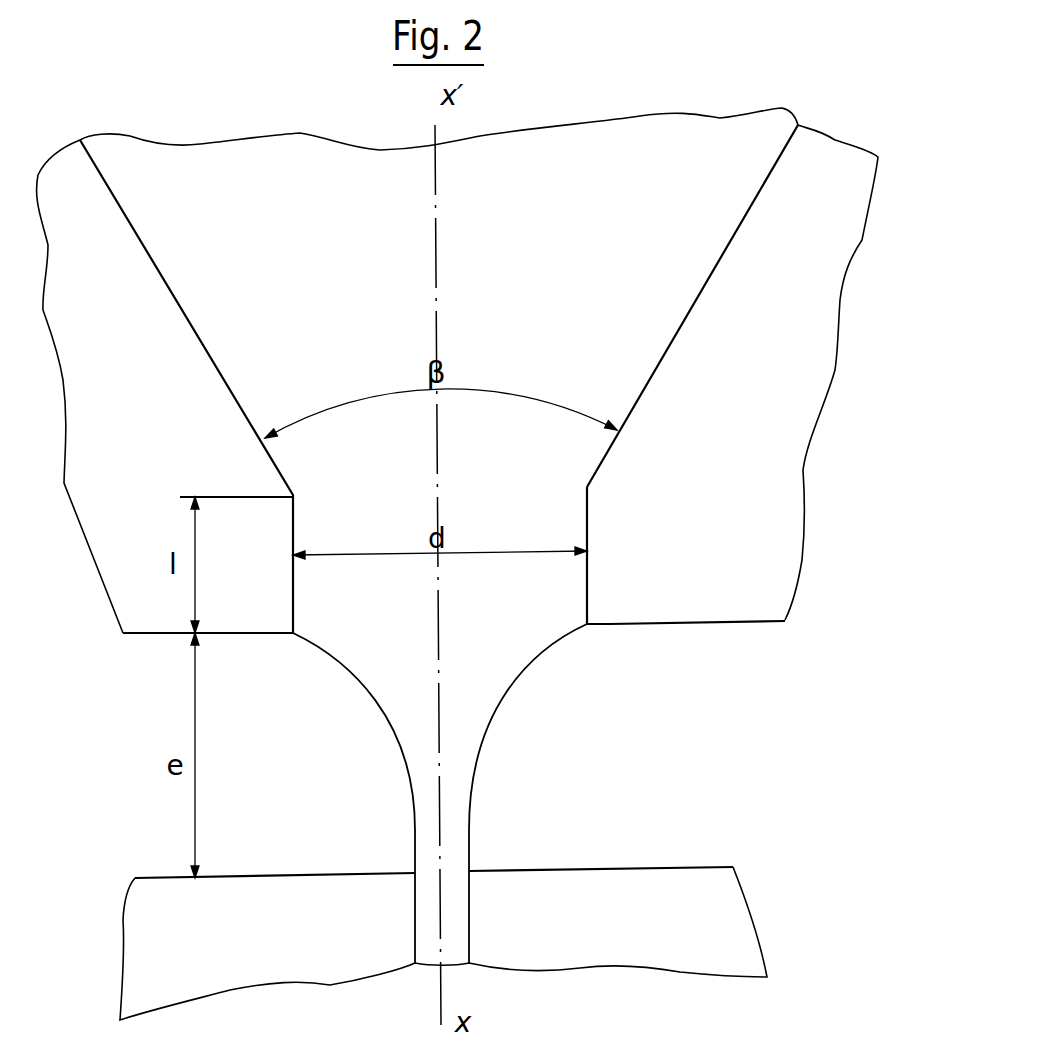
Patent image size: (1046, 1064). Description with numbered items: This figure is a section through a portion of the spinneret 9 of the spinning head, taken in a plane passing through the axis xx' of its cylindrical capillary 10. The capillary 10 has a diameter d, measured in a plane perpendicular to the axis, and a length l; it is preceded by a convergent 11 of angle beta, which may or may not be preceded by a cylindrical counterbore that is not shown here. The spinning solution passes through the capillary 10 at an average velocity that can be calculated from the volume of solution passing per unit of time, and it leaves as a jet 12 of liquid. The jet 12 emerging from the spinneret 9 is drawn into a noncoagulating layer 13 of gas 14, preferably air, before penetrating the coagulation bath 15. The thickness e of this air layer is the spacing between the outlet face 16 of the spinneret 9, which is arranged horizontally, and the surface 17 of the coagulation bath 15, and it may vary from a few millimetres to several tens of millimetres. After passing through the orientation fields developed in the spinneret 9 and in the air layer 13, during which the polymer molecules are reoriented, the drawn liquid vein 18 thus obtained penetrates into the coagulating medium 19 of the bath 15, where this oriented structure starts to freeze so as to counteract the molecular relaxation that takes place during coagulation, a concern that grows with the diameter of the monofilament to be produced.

The spinneret 9 is at (723, 80).
The cylindrical capillary 10 is at (589, 527).
The convergent 11 is at (659, 353).
The jet 12 is at (576, 587).
The noncoagulating layer 13 is at (624, 745).
The gas 14 is at (240, 755).
The coagulation bath 15 is at (606, 937).
The outlet face 16 is at (662, 625).
The surface 17 is at (616, 868).
The drawn liquid vein 18 is at (470, 868).
The coagulating medium 19 is at (272, 892).